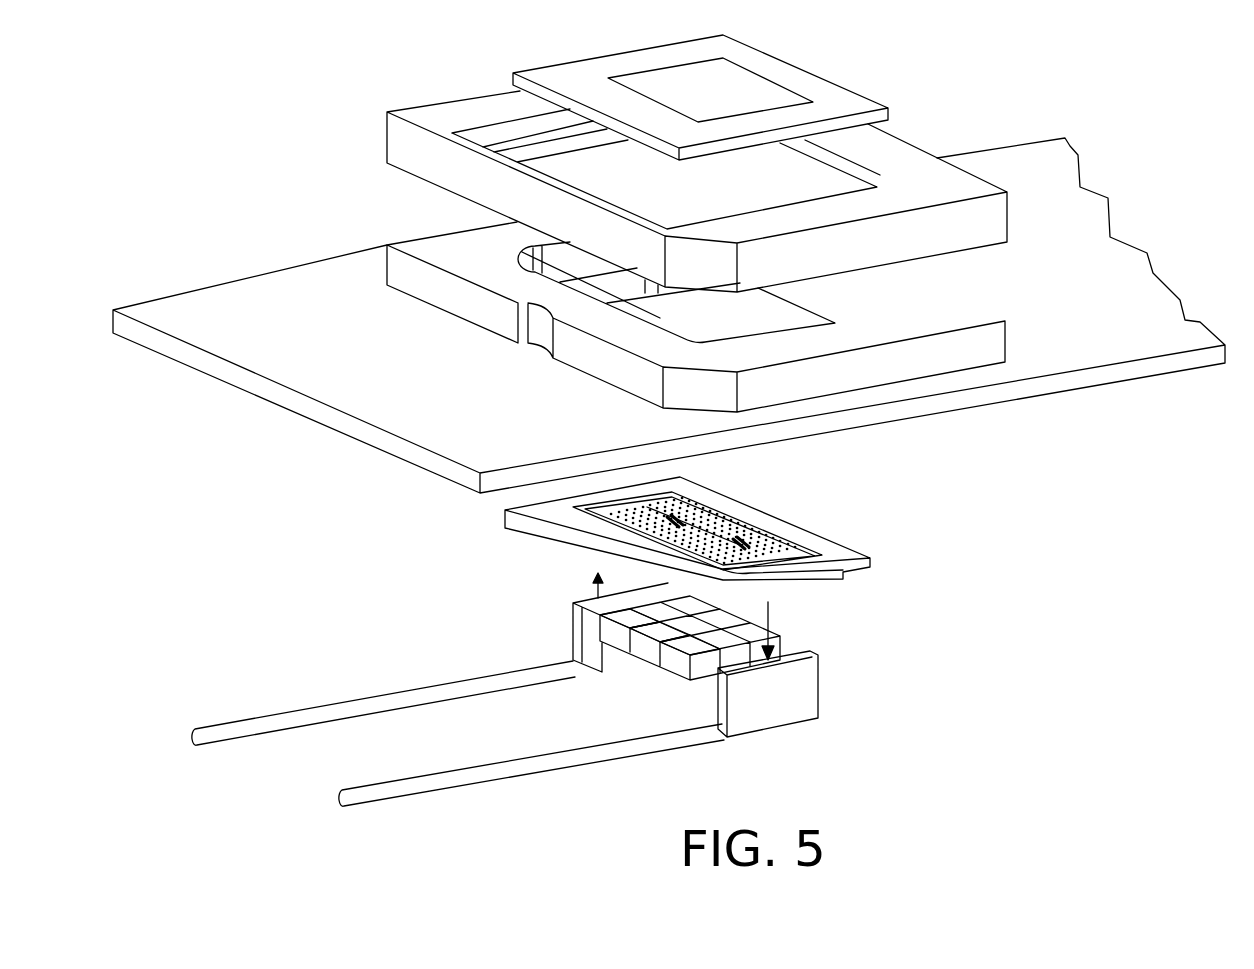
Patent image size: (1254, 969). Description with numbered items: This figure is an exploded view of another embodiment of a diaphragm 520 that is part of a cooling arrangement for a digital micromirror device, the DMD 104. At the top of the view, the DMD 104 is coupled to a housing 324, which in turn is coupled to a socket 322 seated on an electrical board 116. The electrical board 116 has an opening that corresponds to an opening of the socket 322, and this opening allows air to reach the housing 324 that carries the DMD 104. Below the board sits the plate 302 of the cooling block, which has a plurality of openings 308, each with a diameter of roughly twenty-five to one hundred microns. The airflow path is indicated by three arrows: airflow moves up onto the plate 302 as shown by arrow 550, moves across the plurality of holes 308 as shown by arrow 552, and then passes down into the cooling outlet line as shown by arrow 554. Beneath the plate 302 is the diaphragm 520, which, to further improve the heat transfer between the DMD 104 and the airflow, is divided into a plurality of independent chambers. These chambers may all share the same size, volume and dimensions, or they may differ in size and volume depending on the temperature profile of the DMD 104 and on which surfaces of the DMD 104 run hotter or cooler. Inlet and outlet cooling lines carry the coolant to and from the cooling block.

The DMD 104 is at (892, 115).
The housing 324 is at (957, 192).
The electrical board 116 is at (335, 306).
The socket 322 is at (868, 334).
The arrow 552 is at (665, 507).
The plurality of openings 308 is at (548, 528).
The plate 302 is at (678, 599).
The arrow 550 is at (597, 587).
The arrow 554 is at (772, 623).
The diaphragm 520 is at (617, 650).